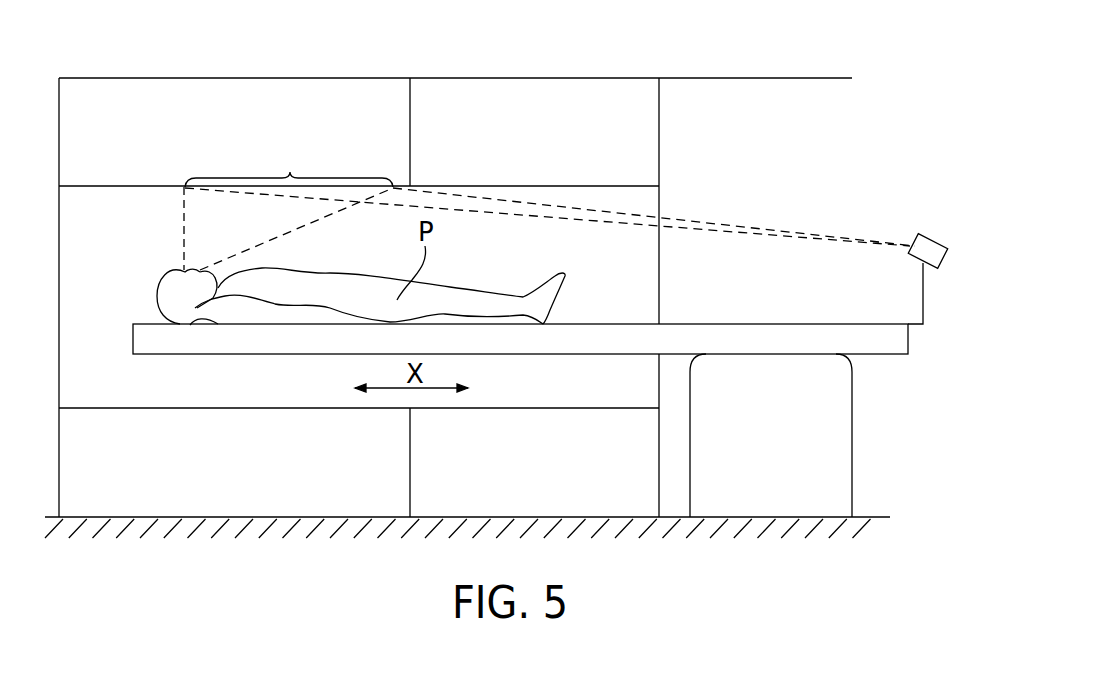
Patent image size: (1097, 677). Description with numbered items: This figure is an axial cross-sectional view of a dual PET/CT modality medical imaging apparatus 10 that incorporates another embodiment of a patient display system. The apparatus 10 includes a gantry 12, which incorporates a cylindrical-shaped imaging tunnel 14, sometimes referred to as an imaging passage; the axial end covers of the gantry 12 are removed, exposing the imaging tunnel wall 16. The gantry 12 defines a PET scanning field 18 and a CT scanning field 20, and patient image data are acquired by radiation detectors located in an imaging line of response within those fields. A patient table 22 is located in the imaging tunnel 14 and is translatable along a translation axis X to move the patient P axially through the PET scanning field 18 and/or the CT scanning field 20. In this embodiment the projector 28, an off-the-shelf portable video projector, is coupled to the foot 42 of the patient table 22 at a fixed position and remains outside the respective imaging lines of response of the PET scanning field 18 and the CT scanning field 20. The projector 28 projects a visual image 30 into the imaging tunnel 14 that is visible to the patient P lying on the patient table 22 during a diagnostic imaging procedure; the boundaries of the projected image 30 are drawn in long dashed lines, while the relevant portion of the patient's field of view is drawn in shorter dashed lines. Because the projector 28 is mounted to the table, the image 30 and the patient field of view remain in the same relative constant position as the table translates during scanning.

The dual-modality imaging apparatus 10 is at (703, 183).
The gantry 12 is at (662, 128).
The imaging tunnel 14 is at (182, 225).
The imaging tunnel wall 16 is at (116, 188).
The PET scanning field 18 is at (318, 77).
The CT scanning field 20 is at (495, 80).
The patient table 22 is at (247, 357).
The projector 28 is at (926, 249).
The visual image 30 is at (550, 205).
The foot of the patient table 42 is at (871, 354).